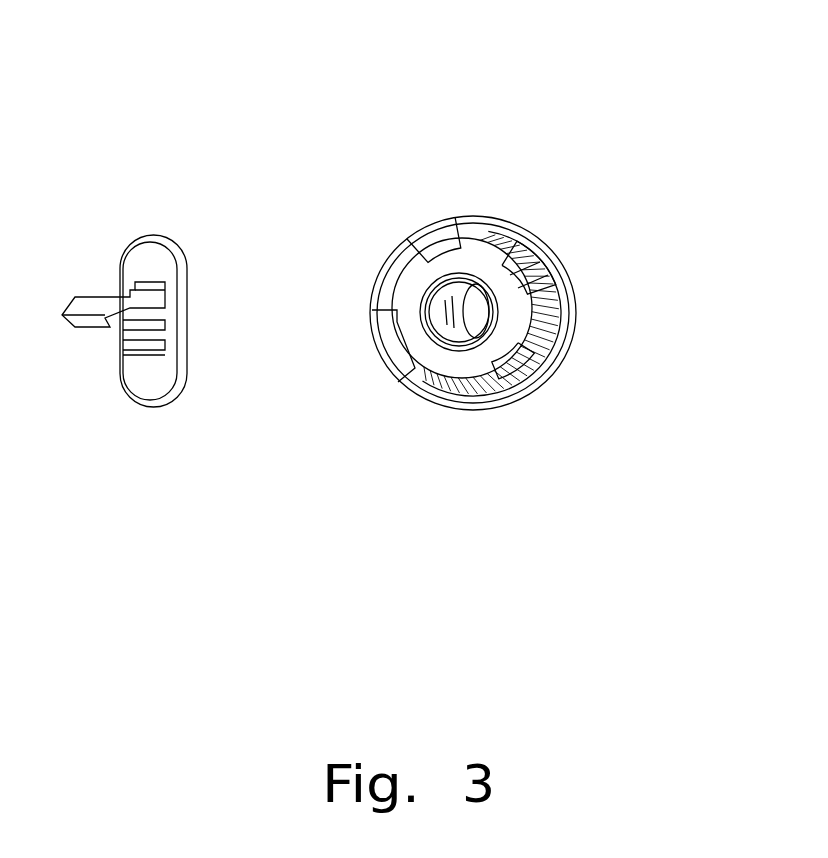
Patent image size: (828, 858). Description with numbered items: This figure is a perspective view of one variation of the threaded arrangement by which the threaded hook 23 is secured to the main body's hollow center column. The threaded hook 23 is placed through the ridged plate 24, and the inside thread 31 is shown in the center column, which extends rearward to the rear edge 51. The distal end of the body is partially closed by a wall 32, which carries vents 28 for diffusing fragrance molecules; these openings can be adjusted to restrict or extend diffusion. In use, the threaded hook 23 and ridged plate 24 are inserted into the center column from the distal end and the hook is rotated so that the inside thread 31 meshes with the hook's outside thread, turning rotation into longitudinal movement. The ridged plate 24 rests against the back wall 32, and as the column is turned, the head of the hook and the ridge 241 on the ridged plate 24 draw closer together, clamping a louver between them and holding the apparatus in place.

The threaded hook 23 is at (112, 297).
The ridged plate 24 is at (165, 250).
The ridge 241 is at (141, 340).
The inside thread 31 is at (443, 300).
The wall 32 is at (475, 233).
The vents 28 is at (527, 280).
The rear edge 51 is at (467, 343).